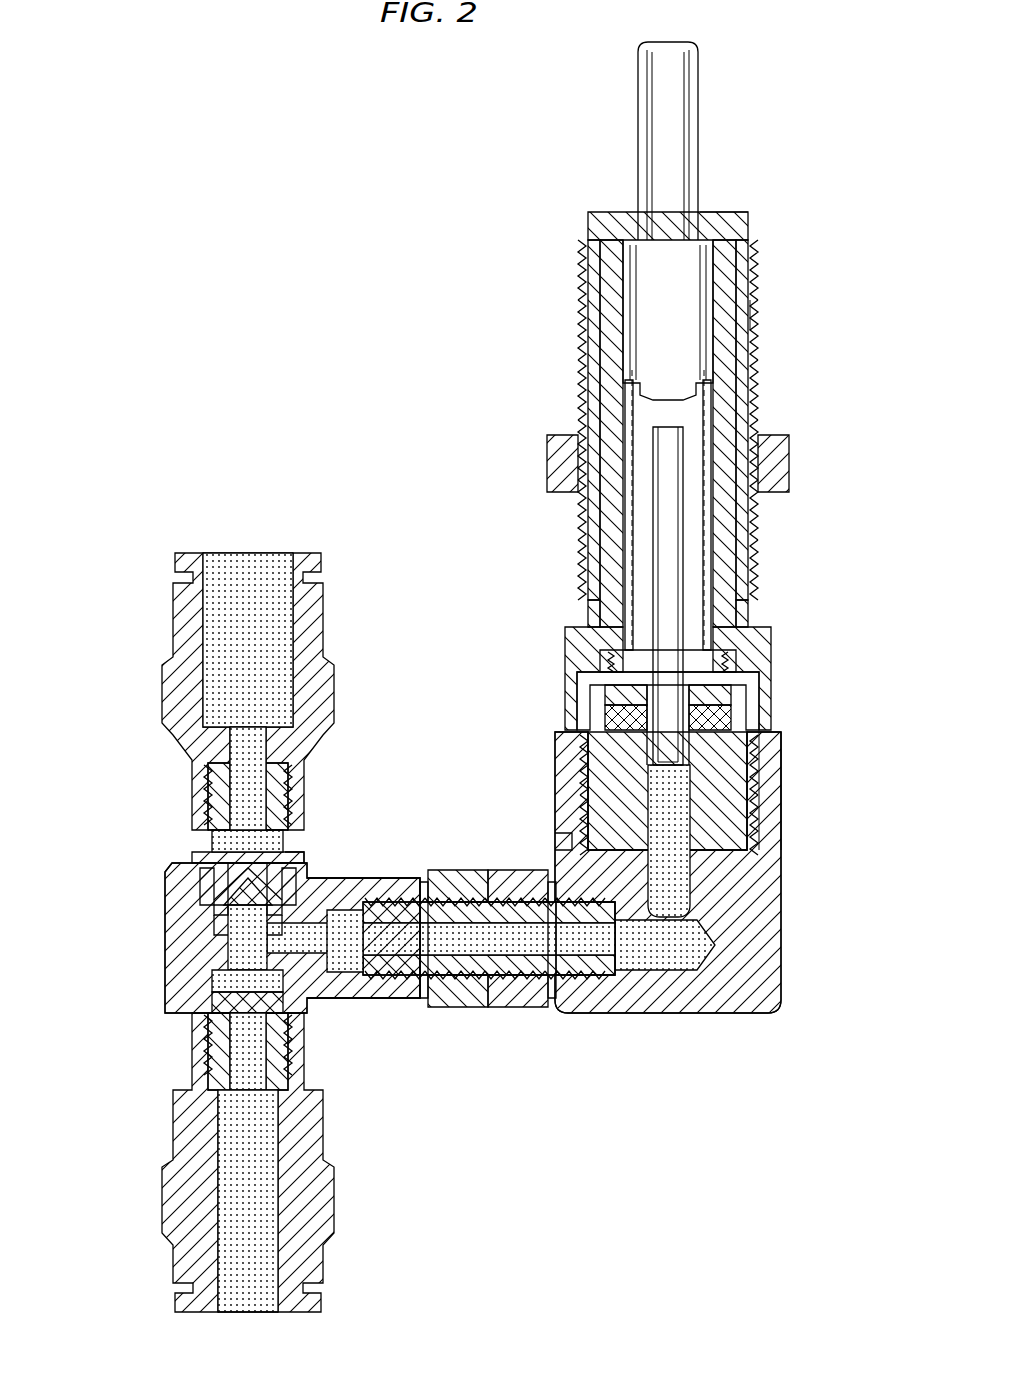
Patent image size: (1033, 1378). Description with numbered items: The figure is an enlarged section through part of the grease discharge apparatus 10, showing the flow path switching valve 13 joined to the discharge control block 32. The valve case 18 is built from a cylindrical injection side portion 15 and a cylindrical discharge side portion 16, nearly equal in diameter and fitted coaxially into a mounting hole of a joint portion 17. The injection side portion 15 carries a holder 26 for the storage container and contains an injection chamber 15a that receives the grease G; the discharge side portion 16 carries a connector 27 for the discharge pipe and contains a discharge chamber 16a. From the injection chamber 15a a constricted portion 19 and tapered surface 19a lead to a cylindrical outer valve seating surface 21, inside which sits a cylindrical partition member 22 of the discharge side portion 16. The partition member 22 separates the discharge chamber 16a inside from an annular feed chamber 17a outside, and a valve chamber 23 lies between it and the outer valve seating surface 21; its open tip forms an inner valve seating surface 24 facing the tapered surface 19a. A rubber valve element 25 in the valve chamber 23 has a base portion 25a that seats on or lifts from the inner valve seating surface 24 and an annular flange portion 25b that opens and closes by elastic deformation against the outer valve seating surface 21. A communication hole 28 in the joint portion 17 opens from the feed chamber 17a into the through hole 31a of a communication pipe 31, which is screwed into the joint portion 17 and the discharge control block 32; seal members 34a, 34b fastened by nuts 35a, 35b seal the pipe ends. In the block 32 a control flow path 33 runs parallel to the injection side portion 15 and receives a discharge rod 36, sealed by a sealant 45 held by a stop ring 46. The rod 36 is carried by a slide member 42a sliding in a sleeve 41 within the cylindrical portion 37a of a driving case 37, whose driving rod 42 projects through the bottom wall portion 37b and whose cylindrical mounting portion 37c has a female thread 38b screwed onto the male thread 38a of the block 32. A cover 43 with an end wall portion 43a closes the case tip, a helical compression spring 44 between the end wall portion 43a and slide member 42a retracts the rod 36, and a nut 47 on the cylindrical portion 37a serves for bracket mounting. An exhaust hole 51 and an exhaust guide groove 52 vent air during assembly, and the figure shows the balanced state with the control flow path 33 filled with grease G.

The grease discharge apparatus 10 is at (782, 689).
The flow path switching valve 13 is at (126, 857).
The cylindrical injection side portion 15 is at (196, 790).
The injection chamber 15a is at (240, 828).
The cylindrical discharge side portion 16 is at (200, 1035).
The discharge chamber 16a is at (212, 995).
The joint portion 17 is at (377, 878).
The annular feed chamber 17a is at (205, 955).
The valve case 18 is at (366, 1014).
The constricted portion 19 is at (300, 848).
The tapered surface 19a is at (205, 860).
The outer valve seating surface 21 is at (210, 898).
The partition member 22 is at (222, 935).
The valve chamber 23 is at (307, 878).
The inner valve seating surface 24 is at (207, 882).
The valve element 25 is at (215, 840).
The base portion 25a is at (214, 925).
The annular flange portion 25b is at (214, 912).
The holder 26 is at (180, 683).
The connector 27 is at (185, 1190).
The communication hole 28 is at (345, 968).
The communication pipe 31 is at (507, 1010).
The through hole 31a is at (592, 985).
The discharge control block 32 is at (738, 978).
The control flow path 33 is at (672, 890).
The seal member 34a is at (425, 1008).
The seal member 34b is at (552, 1010).
The nut 35a is at (455, 870).
The nut 35b is at (520, 870).
The discharge rod 36 is at (668, 568).
The driving case 37 is at (748, 348).
The cylindrical portion 37a is at (757, 312).
The bottom wall portion 37b is at (733, 224).
The cylindrical mounting portion 37c is at (770, 802).
The male thread 38a is at (760, 740).
The female thread 38b is at (752, 770).
The sleeve 41 is at (710, 397).
The driving rod 42 is at (665, 117).
The slide member 42a is at (672, 270).
The cover 43 is at (735, 620).
The end wall portion 43a is at (693, 660).
The helical compression spring 44 is at (705, 520).
The sealant 45 is at (628, 712).
The stop ring 46 is at (628, 688).
The nut 47 is at (772, 462).
The exhaust hole 51 is at (762, 708).
The exhaust guide groove 52 is at (617, 654).
The grease G is at (248, 600).